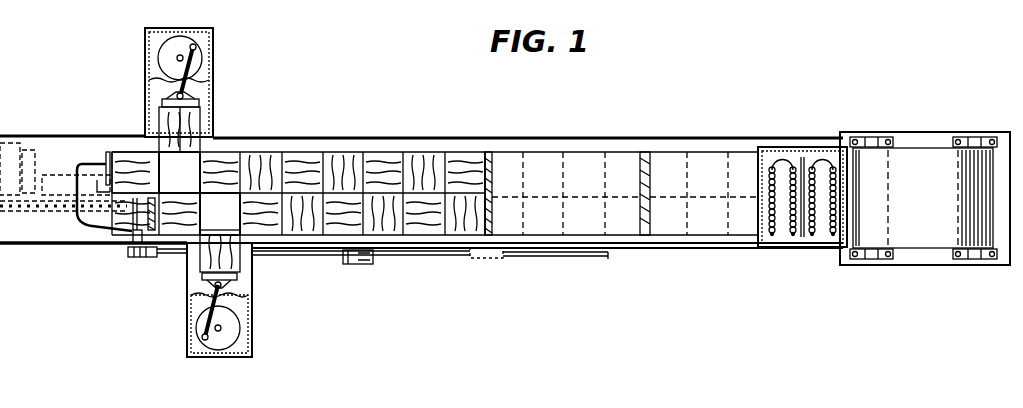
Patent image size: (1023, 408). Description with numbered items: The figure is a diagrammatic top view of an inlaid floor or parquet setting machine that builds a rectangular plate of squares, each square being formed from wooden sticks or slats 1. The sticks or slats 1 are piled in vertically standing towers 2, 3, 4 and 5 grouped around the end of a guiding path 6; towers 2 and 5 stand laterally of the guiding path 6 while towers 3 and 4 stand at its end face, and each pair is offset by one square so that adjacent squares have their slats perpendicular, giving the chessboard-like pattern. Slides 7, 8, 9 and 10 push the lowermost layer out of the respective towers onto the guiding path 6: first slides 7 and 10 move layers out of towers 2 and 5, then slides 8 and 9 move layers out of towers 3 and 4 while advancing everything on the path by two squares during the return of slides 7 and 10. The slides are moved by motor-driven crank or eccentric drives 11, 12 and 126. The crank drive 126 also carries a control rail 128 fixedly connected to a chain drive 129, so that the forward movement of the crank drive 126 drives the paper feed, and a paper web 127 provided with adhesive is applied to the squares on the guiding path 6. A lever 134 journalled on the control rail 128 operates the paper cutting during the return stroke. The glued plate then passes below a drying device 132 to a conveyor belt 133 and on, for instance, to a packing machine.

The sticks or slats 1 is at (157, 118).
The tower 2 is at (205, 124).
The tower 3 is at (176, 240).
The tower 4 is at (125, 146).
The tower 5 is at (242, 262).
The guiding path 6 is at (538, 147).
The slide 7 is at (192, 98).
The slide 8 is at (152, 208).
The slide 9 is at (106, 163).
The slide 10 is at (238, 288).
The crank or eccentric drive 11 is at (200, 324).
The crank or eccentric drive 12 is at (149, 47).
The crank drive 126 is at (143, 258).
The paper web 127 is at (661, 153).
The control rail 128 is at (440, 258).
The chain drive 129 is at (606, 256).
The drying device 132 is at (822, 152).
The conveyor belt 133 is at (920, 242).
The lever 134 is at (352, 268).